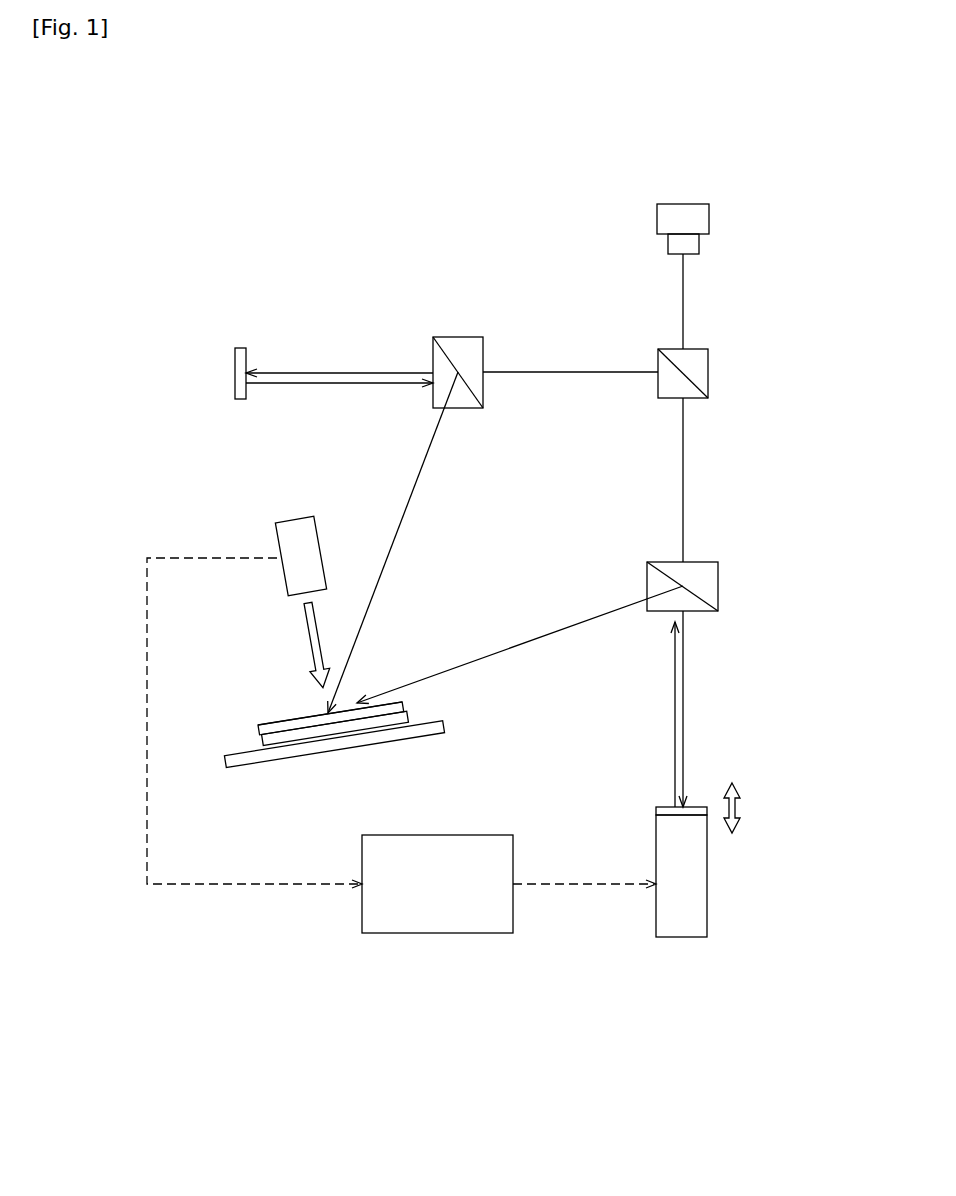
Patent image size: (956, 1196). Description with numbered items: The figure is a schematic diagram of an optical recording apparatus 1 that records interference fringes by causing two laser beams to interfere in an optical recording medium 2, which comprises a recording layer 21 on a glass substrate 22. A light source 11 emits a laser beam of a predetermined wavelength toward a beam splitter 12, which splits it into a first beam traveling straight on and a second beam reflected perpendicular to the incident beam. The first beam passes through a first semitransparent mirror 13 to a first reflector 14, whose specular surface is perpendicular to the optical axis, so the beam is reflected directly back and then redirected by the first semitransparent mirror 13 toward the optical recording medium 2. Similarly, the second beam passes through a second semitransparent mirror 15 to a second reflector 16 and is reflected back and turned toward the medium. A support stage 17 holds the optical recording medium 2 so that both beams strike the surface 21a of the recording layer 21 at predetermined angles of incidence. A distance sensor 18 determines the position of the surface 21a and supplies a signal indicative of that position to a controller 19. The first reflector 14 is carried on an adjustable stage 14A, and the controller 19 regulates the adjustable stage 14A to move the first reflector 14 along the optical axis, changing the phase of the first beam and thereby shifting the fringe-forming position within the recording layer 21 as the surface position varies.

The optical recording apparatus 1 is at (357, 221).
The light source 11 is at (709, 219).
The beam splitter 12 is at (708, 372).
The first semitransparent mirror 13 is at (718, 586).
The first reflector 14 is at (707, 811).
The adjustable stage 14A is at (707, 870).
The second semitransparent mirror 15 is at (458, 337).
The second reflector 16 is at (240, 348).
The support stage 17 is at (445, 726).
The distance sensor 18 is at (292, 517).
The controller 19 is at (438, 933).
The optical recording medium 2 is at (280, 735).
The recording layer 21 is at (257, 728).
The surface 21a is at (272, 722).
The glass substrate 22 is at (258, 747).